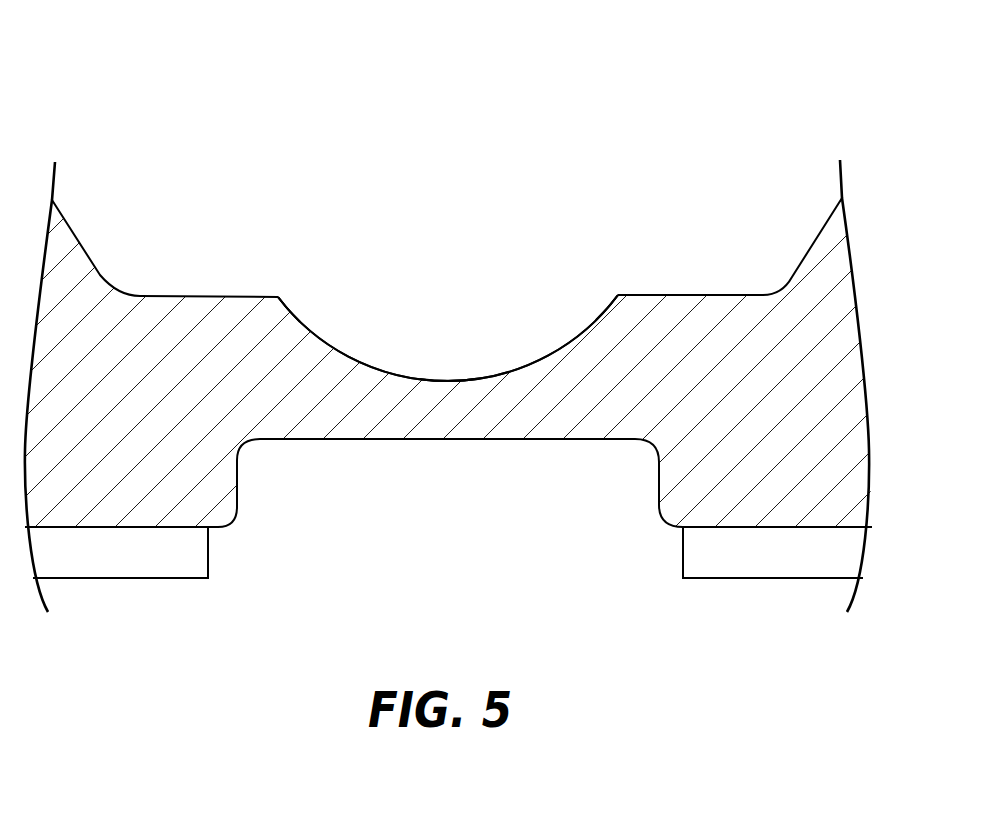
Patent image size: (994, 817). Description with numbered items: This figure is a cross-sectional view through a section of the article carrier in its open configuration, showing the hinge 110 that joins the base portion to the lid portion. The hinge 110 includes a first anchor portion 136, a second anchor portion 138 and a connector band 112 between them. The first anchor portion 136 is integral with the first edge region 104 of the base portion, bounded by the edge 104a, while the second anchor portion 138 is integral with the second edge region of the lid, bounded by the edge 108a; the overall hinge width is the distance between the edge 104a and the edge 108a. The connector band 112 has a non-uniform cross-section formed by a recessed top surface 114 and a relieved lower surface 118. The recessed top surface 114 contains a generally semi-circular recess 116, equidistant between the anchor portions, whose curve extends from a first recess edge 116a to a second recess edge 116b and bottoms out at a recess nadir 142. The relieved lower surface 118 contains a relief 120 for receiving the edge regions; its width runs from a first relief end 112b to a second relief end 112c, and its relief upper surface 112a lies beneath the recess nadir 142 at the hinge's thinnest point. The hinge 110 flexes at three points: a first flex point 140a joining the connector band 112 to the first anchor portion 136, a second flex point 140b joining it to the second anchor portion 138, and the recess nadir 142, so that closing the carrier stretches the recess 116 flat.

The hinge 110 is at (195, 90).
The first edge region 104 is at (108, 497).
The edge of the base portion 104a is at (60, 212).
The edge of the lid portion 108a is at (822, 228).
The connector band 112 is at (187, 295).
The relief upper surface 112a is at (513, 440).
The first relief end 112b is at (240, 512).
The second relief end 112c is at (655, 510).
The recessed top surface 114 is at (540, 232).
The recess 116 is at (320, 335).
The first recess edge 116a is at (278, 296).
The second recess edge 116b is at (618, 294).
The relieved lower surface 118 is at (208, 622).
The relief 120 is at (432, 440).
The first anchor portion 136 is at (80, 497).
The second anchor portion 138 is at (700, 322).
The first flex point 140a is at (248, 443).
The second flex point 140b is at (638, 443).
The recess nadir 142 is at (440, 380).